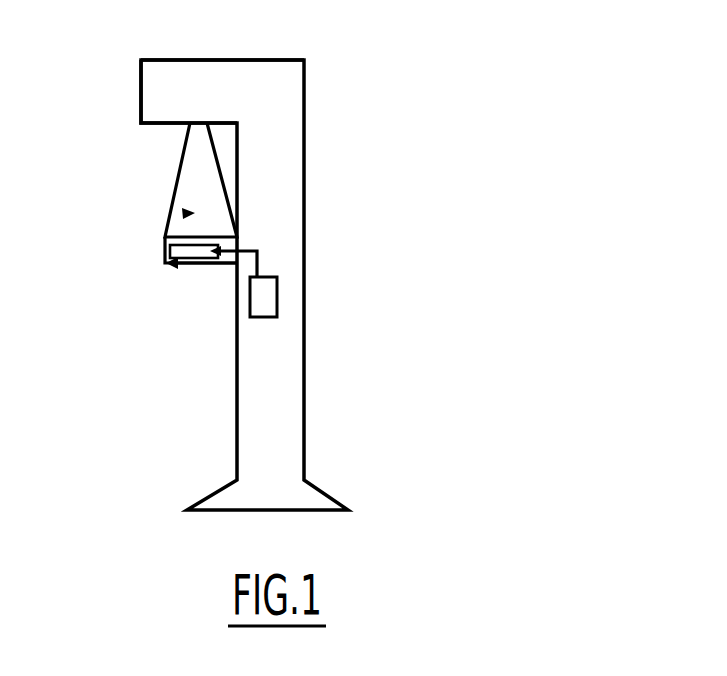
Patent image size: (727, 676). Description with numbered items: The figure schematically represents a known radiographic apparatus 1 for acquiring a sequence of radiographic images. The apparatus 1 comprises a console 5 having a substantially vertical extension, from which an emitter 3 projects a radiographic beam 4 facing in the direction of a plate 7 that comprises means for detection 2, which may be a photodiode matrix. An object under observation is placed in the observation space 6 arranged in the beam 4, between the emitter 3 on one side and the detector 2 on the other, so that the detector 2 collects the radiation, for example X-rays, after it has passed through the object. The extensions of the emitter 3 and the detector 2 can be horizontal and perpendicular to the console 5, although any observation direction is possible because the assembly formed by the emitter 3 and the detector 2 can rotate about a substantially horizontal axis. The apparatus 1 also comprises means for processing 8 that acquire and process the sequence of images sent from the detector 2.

The apparatus 1 is at (360, 210).
The means for detection 2 is at (169, 265).
The emitter 3 is at (215, 70).
The radiographic beam 4 is at (190, 185).
The console 5 is at (293, 372).
The observation space 6 is at (186, 214).
The plate 7 is at (225, 265).
The means for processing 8 is at (267, 305).